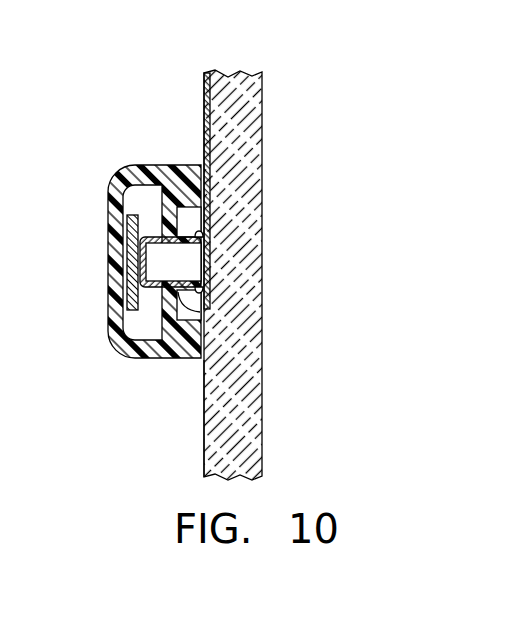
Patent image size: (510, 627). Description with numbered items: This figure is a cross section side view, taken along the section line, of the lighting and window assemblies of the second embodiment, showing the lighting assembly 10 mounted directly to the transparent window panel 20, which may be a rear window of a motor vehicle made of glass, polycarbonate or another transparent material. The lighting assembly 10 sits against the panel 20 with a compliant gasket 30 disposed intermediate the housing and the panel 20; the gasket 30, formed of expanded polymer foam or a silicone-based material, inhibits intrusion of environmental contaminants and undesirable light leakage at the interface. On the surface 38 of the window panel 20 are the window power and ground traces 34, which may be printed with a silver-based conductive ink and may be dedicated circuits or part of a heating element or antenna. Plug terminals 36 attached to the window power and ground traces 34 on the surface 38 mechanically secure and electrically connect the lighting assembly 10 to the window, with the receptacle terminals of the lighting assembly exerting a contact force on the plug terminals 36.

The lighting assembly 10 is at (190, 212).
The window panel 20 is at (263, 145).
The gasket 30 is at (198, 163).
The window power and ground traces 34 is at (205, 102).
The plug terminals 36 is at (205, 309).
The surface 38 is at (204, 410).